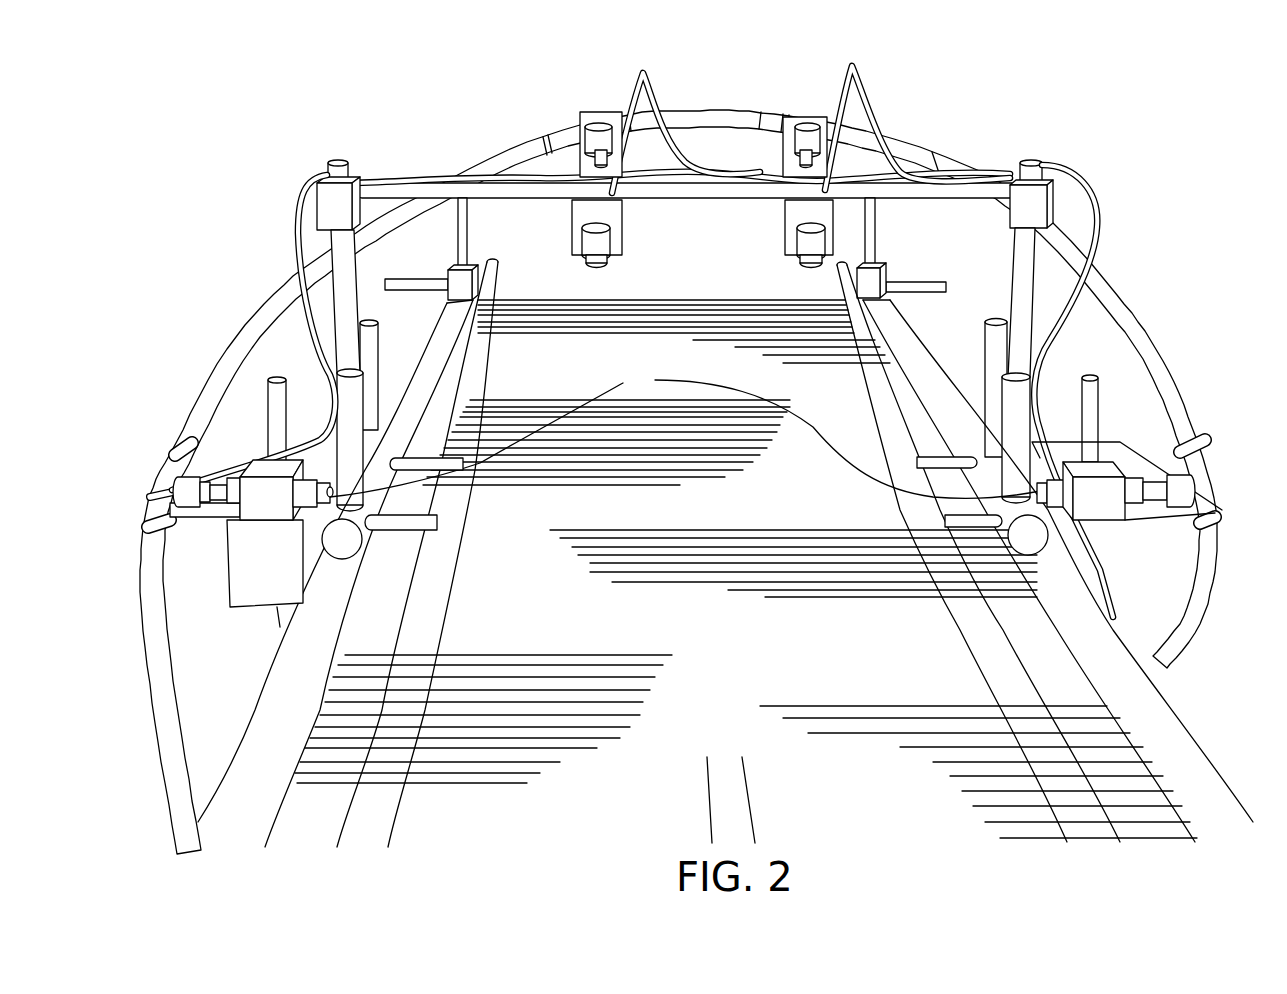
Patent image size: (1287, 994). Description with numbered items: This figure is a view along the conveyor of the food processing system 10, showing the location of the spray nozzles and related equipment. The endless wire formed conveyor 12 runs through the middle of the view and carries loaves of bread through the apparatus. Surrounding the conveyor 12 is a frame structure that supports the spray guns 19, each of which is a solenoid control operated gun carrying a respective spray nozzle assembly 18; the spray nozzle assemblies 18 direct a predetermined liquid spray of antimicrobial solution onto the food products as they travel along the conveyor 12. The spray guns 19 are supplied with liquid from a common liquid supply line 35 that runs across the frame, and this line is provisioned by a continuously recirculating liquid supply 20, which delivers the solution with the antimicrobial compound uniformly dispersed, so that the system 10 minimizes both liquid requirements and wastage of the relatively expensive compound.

The food processing system 10 is at (972, 145).
The conveyor 12 is at (565, 697).
The spray nozzle assemblies 18 is at (597, 267).
The solenoid control operated spray gun 19 is at (267, 470).
The liquid supply 20 is at (1140, 553).
The common liquid supply line 35 is at (483, 163).